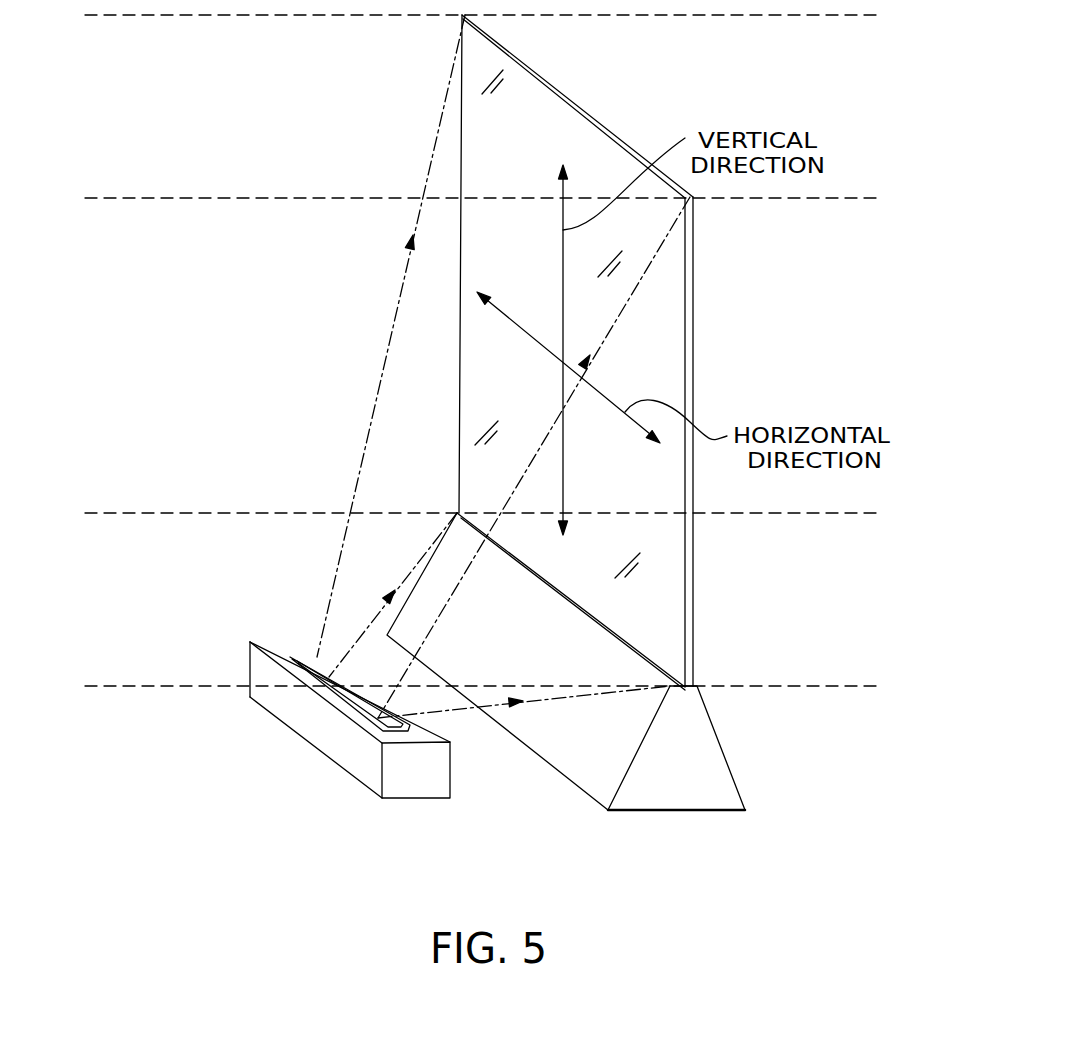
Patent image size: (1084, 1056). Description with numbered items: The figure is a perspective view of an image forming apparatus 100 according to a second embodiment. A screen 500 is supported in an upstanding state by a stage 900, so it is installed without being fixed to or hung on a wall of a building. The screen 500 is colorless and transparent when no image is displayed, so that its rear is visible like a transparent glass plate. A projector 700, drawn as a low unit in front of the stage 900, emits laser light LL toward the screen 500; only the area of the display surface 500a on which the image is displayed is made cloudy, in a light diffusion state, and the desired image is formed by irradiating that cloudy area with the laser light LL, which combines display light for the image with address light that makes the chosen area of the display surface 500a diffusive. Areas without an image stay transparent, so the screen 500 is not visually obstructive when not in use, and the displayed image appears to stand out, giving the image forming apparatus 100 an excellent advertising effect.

The image forming apparatus 100 is at (270, 300).
The screen 500 is at (592, 102).
The display surface 500a is at (665, 358).
The laser light LL is at (380, 383).
The projector 700 is at (323, 738).
The stage 900 is at (705, 760).